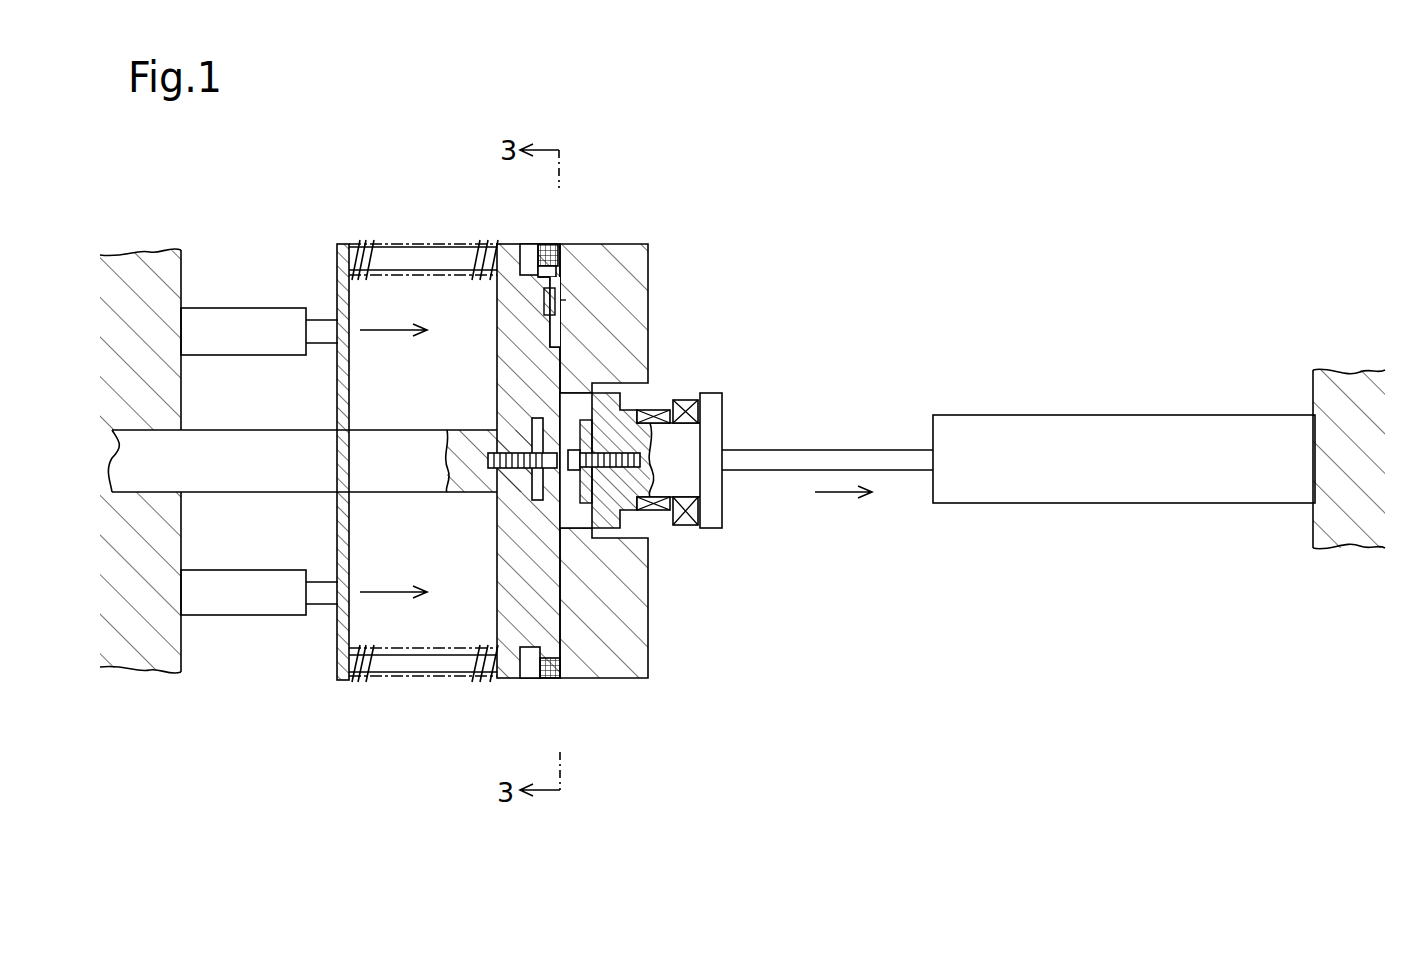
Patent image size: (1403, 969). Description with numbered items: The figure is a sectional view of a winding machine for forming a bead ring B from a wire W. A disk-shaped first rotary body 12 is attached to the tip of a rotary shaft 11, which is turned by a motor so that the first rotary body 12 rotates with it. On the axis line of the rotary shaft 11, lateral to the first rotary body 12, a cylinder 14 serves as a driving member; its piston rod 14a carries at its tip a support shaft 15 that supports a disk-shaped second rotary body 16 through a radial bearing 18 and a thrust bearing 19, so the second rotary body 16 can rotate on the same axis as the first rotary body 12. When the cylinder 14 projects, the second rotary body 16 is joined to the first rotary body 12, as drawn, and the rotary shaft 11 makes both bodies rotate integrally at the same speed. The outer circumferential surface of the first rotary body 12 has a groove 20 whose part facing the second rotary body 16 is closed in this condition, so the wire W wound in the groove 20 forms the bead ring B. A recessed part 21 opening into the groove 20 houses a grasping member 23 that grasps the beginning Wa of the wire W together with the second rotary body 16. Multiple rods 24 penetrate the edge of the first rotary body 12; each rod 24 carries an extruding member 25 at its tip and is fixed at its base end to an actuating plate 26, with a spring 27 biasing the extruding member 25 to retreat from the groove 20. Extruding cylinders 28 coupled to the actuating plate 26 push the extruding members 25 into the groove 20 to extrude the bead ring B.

The rotary shaft 11 is at (262, 444).
The first rotary body 12 is at (505, 358).
The cylinder 14 is at (1032, 425).
The piston rod 14a is at (843, 457).
The support shaft 15 is at (702, 437).
The second rotary body 16 is at (648, 328).
The radial bearing 18 is at (653, 525).
The thrust bearing 19 is at (694, 525).
The groove 20 is at (560, 668).
The recessed part 21 is at (553, 343).
The grasping member 23 is at (548, 303).
The rods 24 is at (394, 254).
The extruding member 25 is at (530, 250).
The actuating plate 26 is at (345, 258).
The spring 27 is at (465, 254).
The extruding cylinders 28 is at (265, 332).
The wire W is at (549, 252).
The beginning of the wire Wa is at (566, 304).
The bead ring B is at (565, 250).